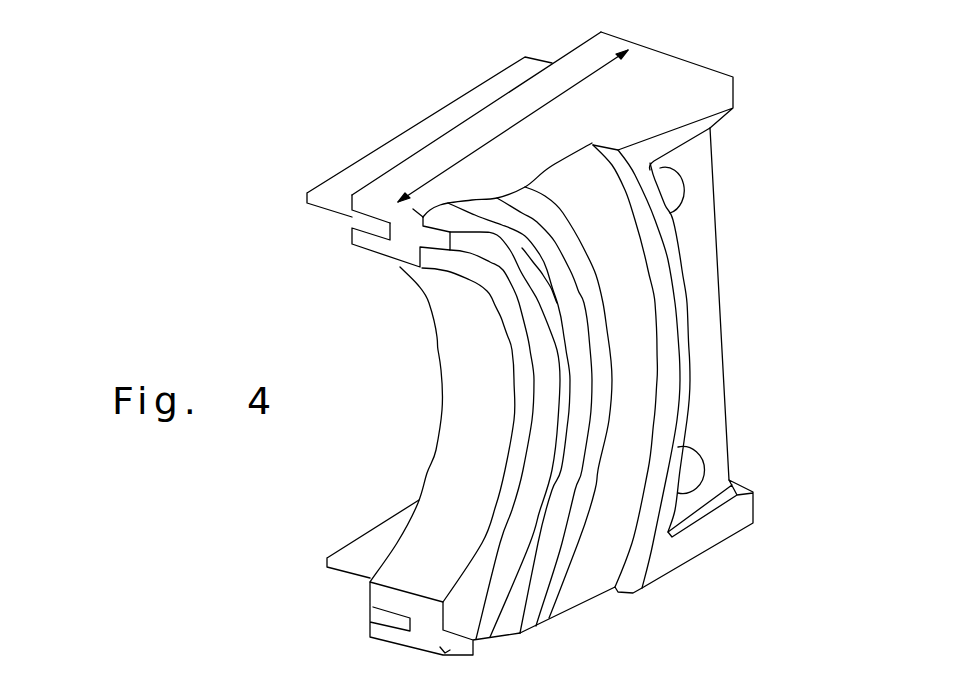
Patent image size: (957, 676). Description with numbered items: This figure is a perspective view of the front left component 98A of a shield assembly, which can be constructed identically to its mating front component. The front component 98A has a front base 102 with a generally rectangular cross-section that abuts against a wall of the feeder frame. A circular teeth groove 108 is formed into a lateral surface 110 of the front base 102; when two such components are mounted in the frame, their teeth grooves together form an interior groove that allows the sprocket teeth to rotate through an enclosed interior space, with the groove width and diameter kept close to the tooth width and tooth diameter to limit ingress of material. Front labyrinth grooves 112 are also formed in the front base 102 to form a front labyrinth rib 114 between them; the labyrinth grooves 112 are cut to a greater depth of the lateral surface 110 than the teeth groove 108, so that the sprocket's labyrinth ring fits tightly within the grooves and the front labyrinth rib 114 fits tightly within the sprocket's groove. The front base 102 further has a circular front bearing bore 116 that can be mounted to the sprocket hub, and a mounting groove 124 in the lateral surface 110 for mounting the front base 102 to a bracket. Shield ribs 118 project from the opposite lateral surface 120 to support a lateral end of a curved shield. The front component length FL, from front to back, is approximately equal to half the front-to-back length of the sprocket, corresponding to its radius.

The front base 102 is at (687, 75).
The lateral surface 120 is at (410, 163).
The front component length FL is at (513, 126).
The front left component 98A is at (712, 129).
The shield ribs 118 is at (323, 182).
The circular front bearing bore 116 is at (437, 520).
The front labyrinth grooves 112 is at (574, 337).
The front labyrinth rib 114 is at (547, 413).
The circular teeth groove 108 is at (634, 390).
The mounting groove 124 is at (703, 428).
The lateral surface 110 is at (678, 553).